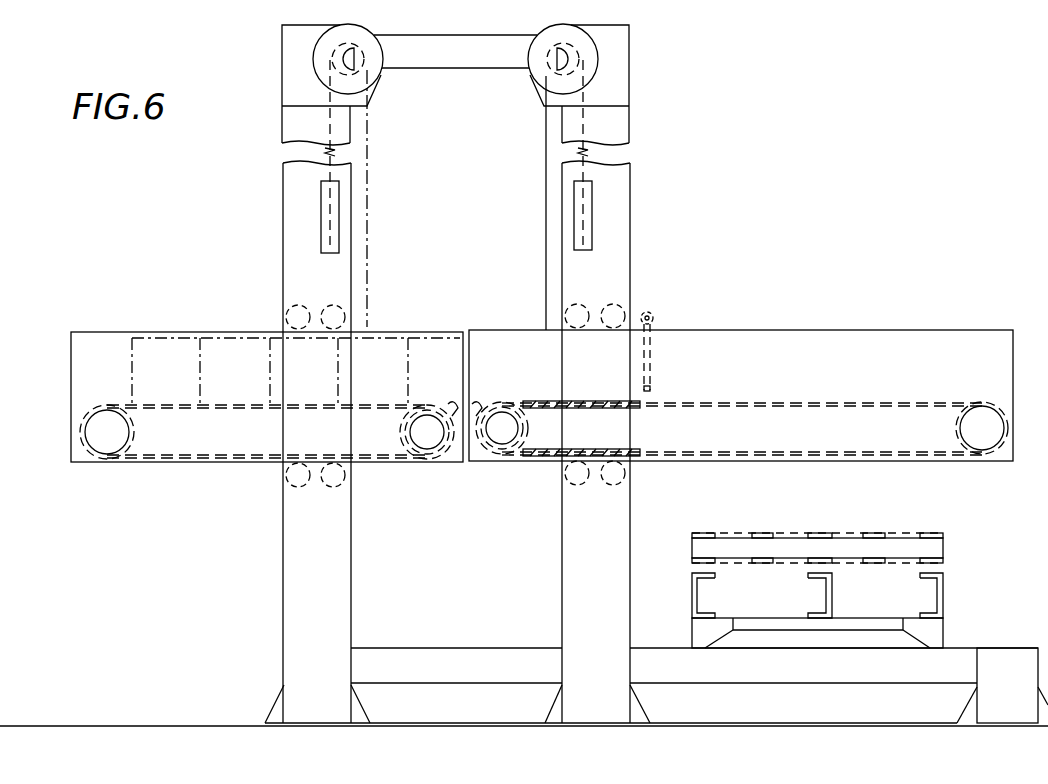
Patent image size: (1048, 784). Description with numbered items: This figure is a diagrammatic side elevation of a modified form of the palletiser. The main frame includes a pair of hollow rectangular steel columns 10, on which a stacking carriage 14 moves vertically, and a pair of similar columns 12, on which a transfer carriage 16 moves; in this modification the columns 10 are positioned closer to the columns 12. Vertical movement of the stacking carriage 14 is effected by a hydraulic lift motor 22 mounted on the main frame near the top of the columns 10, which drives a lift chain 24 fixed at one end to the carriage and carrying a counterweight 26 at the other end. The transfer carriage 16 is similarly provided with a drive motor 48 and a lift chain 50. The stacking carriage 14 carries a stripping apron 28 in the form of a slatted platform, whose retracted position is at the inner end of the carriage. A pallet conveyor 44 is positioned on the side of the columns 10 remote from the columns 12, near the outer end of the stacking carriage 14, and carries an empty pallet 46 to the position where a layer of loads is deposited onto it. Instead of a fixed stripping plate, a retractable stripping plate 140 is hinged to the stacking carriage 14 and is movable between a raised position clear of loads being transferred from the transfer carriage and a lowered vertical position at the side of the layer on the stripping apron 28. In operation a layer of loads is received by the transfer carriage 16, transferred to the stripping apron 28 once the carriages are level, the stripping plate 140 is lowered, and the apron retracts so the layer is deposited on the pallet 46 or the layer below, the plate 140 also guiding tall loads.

The columns 10 is at (620, 183).
The columns 12 is at (294, 183).
The stacking carriage 14 is at (787, 355).
The transfer carriage 16 is at (160, 350).
The hydraulic lift motor 22 is at (552, 25).
The lift chain 24 is at (546, 184).
The counterweight 26 is at (336, 235).
The stripping apron 28 is at (533, 400).
The conveyor 44 is at (928, 634).
The pallet 46 is at (875, 533).
The drive motor 48 is at (362, 28).
The lift chain 50 is at (367, 184).
The retractable stripping plate 140 is at (651, 361).